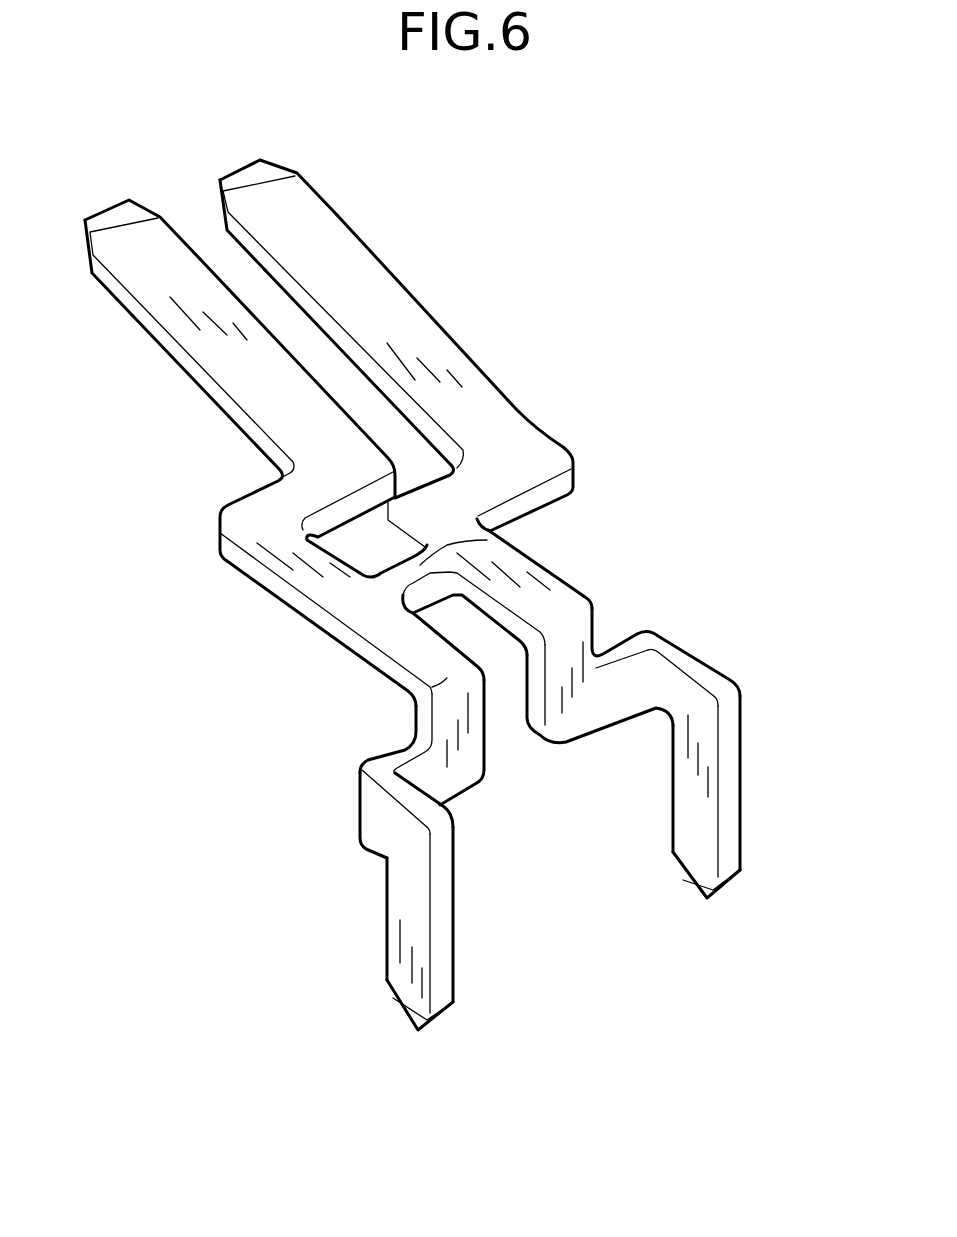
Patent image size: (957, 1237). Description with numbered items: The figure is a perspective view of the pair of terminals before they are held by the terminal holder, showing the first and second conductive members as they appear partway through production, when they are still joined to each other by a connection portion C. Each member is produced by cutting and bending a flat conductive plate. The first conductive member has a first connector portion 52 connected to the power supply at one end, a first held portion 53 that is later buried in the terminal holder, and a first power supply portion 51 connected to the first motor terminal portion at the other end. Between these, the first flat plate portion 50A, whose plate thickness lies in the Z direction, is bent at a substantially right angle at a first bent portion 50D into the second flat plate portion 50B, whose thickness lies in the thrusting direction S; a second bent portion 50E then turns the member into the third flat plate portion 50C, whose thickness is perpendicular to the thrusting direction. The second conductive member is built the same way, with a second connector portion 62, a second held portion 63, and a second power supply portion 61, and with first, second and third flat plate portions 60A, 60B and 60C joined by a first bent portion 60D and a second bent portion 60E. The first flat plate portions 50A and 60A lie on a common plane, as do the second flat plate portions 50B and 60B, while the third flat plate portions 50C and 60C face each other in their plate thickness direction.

The first flat plate portion 50A is at (270, 396).
The second flat plate portion 50B is at (458, 773).
The third flat plate portion 50C is at (402, 907).
The first bent portion 50D is at (410, 695).
The second bent portion 50E is at (360, 811).
The first power supply portion 51 is at (402, 977).
The first connector portion 52 is at (137, 240).
The first held portion 53 is at (372, 618).
The first flat plate portion 60A is at (413, 335).
The second flat plate portion 60B is at (590, 712).
The third flat plate portion 60C is at (743, 782).
The first bent portion 60D is at (570, 620).
The second bent portion 60E is at (652, 675).
The second power supply portion 61 is at (692, 852).
The second connector portion 62 is at (282, 192).
The second held portion 63 is at (535, 592).
The connection portion C is at (487, 540).